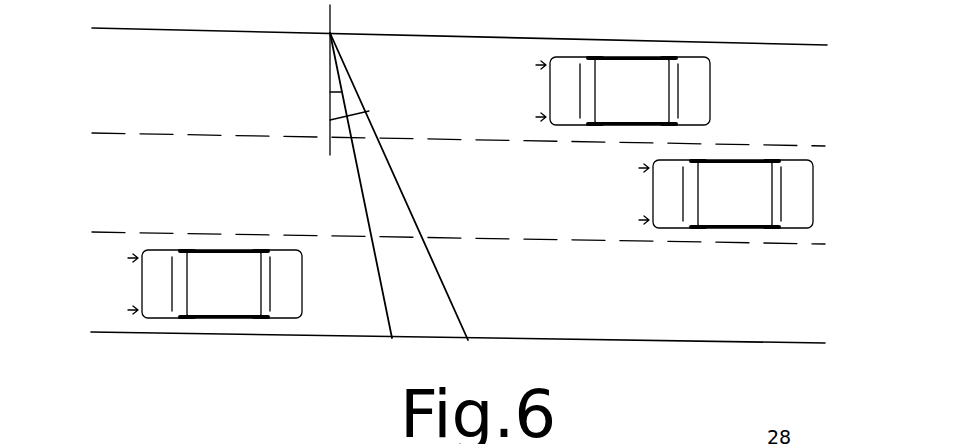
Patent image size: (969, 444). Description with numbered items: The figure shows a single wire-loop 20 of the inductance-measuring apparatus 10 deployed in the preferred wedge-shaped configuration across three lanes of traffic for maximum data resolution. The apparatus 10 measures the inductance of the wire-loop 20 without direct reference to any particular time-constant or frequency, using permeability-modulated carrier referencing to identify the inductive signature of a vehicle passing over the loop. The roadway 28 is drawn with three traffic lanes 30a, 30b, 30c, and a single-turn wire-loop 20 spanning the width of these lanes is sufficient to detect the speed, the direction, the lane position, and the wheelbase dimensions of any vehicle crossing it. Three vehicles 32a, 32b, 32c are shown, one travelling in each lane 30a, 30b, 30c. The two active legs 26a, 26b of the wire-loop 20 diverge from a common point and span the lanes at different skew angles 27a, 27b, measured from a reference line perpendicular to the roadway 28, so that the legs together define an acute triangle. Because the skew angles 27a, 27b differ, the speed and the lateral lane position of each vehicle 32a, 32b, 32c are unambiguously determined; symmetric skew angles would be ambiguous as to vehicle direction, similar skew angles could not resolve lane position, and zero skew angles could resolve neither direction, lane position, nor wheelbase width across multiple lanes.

The apparatus 10 is at (370, 349).
The wire-loop 20 is at (388, 186).
The first active leg 26a is at (360, 185).
The second active leg 26b is at (396, 182).
The first skew angle 27a is at (328, 103).
The second skew angle 27b is at (328, 127).
The roadway 28 is at (792, 45).
The first traffic lane 30a is at (790, 106).
The second traffic lane 30b is at (138, 180).
The third traffic lane 30c is at (775, 300).
The first vehicle 32a is at (633, 82).
The second vehicle 32b is at (755, 191).
The third vehicle 32c is at (213, 297).